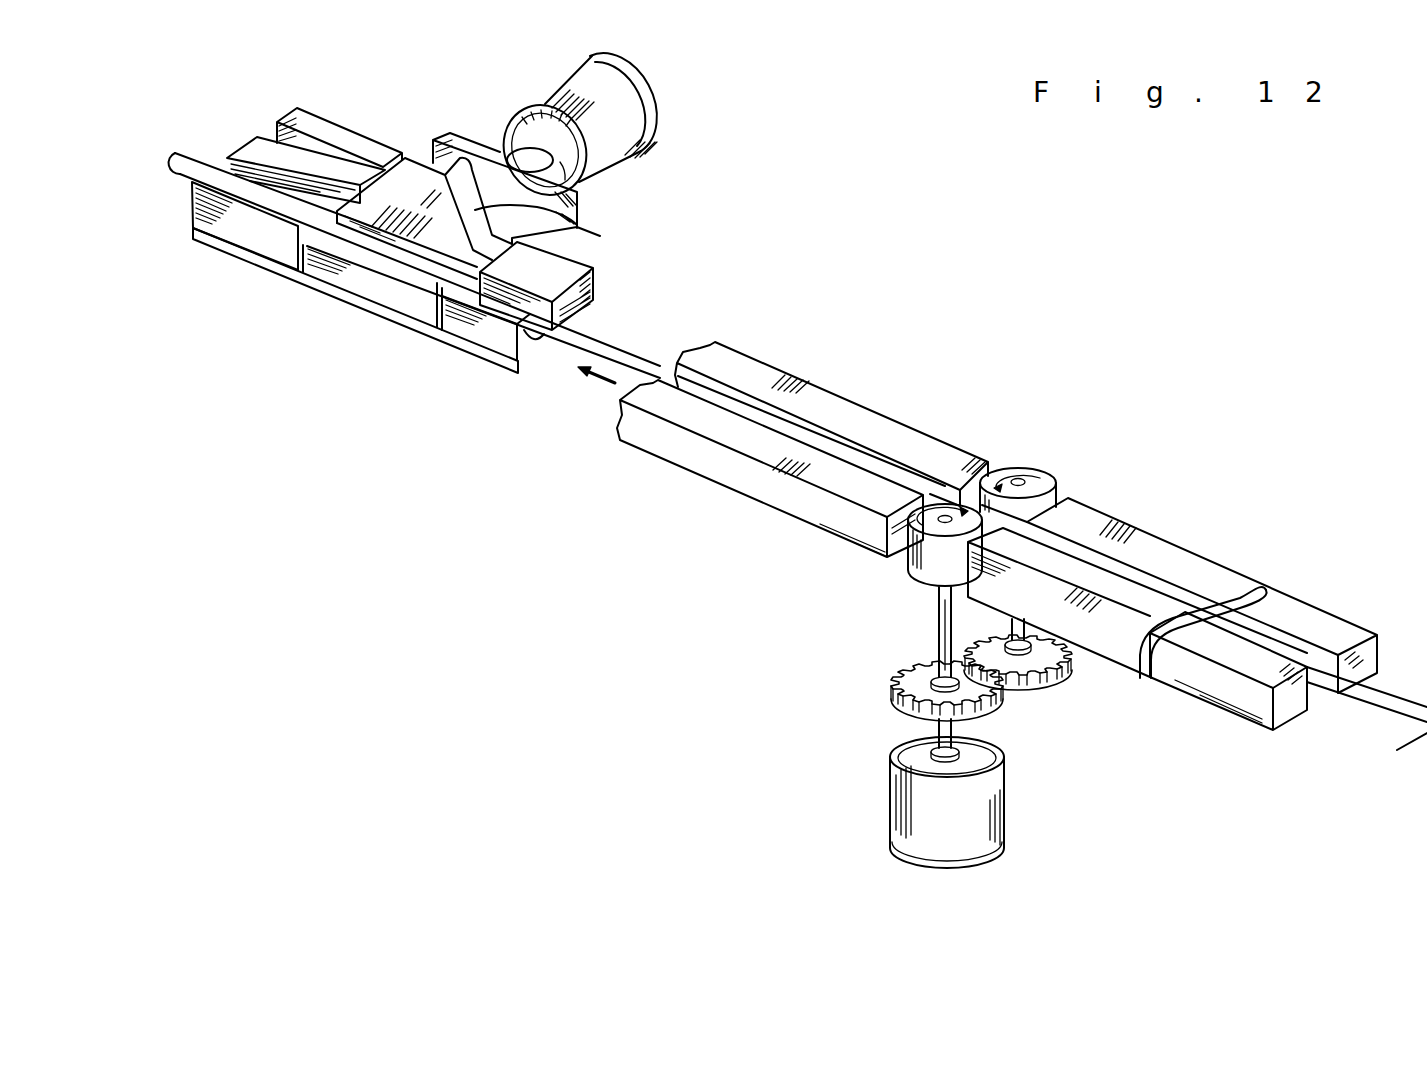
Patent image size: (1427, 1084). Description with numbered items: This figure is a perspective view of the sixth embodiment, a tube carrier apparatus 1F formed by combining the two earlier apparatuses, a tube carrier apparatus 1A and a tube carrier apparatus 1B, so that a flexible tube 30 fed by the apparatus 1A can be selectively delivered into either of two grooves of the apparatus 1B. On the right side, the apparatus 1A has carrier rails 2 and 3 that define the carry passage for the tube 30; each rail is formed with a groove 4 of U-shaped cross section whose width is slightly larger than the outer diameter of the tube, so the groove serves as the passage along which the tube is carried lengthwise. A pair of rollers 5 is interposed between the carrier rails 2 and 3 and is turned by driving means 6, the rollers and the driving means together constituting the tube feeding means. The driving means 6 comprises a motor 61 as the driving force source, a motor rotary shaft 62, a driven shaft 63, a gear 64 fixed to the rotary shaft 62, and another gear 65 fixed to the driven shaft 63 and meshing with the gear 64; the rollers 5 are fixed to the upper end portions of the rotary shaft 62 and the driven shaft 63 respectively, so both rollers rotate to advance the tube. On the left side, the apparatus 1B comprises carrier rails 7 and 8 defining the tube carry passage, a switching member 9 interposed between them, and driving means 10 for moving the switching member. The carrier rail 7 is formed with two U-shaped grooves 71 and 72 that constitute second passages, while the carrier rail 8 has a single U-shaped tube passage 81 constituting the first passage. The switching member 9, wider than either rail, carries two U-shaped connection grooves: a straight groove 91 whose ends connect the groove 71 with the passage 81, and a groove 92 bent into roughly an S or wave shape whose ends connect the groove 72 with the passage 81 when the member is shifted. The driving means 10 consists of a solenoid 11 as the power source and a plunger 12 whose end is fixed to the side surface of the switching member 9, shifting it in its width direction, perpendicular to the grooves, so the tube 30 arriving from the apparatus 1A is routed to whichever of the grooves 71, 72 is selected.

The tube carrier apparatus 1A is at (997, 593).
The tube carrier apparatus 1B is at (413, 218).
The tube carrier apparatus 1F is at (352, 620).
The carrier rail 2 is at (752, 486).
The carrier rail 3 is at (1188, 565).
The groove 4 is at (817, 430).
The rollers 5 is at (1028, 478).
The driving means 6 is at (962, 727).
The carrier rail 7 is at (248, 156).
The carrier rail 8 is at (578, 306).
The switching member 9 is at (417, 187).
The driving means 10 is at (655, 165).
The solenoid 11 is at (577, 98).
The plunger 12 is at (527, 160).
The tube 30 is at (1362, 704).
The motor 61 is at (903, 824).
The motor rotary shaft 62 is at (937, 620).
The driven shaft 63 is at (1000, 625).
The gear 64 is at (903, 700).
The gear 65 is at (1047, 658).
The groove 71 is at (247, 183).
The groove 72 is at (318, 152).
The tube passage 81 is at (513, 305).
The groove 91 is at (398, 253).
The groove 92 is at (573, 237).